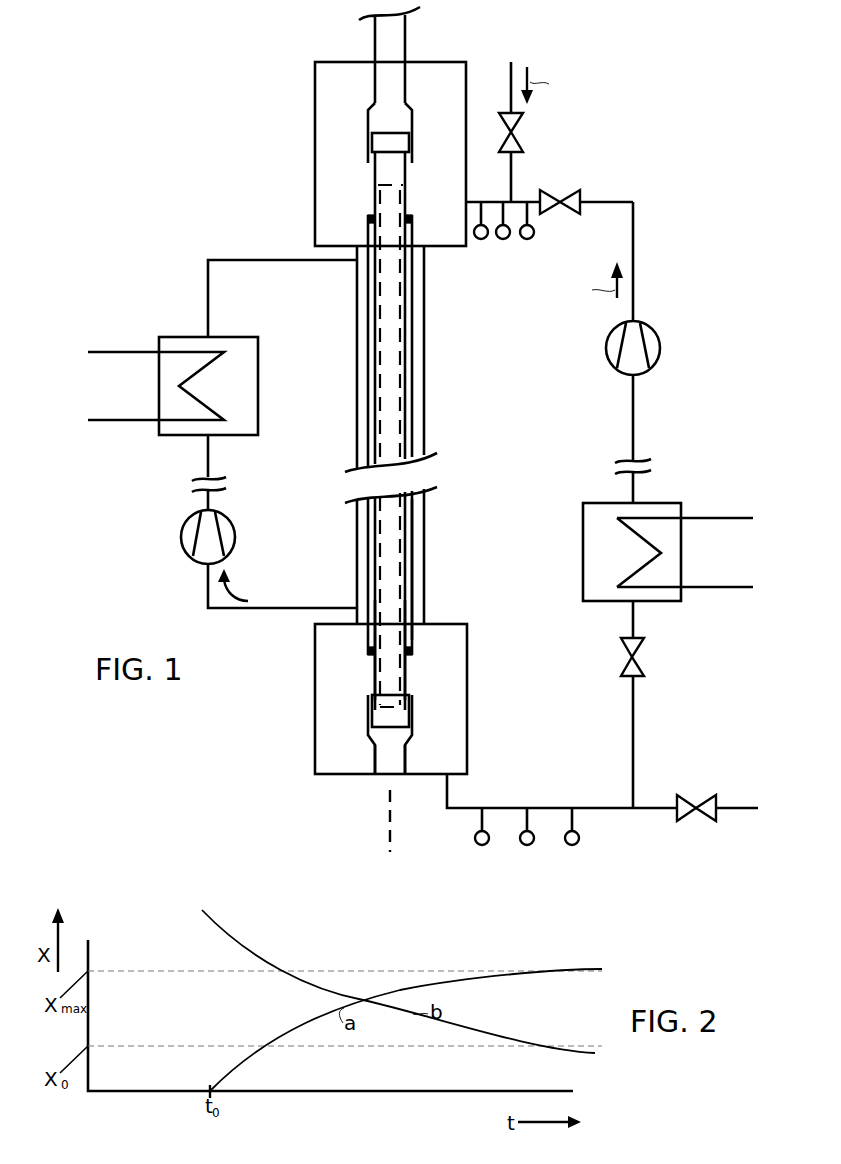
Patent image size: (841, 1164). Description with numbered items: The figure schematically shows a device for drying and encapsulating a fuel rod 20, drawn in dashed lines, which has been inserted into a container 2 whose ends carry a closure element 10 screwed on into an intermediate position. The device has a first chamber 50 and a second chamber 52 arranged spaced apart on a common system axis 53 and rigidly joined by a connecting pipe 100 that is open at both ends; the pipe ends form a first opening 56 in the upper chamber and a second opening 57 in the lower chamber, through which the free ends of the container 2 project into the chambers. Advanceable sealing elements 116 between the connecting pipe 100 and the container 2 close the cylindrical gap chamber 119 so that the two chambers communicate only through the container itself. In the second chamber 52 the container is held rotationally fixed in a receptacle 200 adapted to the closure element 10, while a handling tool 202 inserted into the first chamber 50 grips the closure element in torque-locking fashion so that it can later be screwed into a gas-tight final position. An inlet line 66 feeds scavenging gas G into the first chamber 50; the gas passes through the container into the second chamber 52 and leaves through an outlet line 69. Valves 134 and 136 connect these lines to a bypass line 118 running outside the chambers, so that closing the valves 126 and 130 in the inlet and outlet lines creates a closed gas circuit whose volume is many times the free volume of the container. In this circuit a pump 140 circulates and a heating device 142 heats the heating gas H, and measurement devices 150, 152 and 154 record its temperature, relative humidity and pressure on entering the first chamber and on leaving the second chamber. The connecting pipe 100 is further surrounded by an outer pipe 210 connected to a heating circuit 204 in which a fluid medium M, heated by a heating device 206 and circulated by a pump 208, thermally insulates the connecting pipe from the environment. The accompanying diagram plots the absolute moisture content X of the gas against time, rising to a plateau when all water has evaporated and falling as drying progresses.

The container 2 is at (410, 668).
The closure element 10 is at (400, 145).
The fuel rod 20 is at (392, 409).
The first chamber 50 is at (335, 95).
The second chamber 52 is at (435, 745).
The system axis 53 is at (388, 846).
The first opening 56 is at (368, 214).
The second opening 57 is at (367, 656).
The inlet line 66 is at (474, 201).
The outlet line 69 is at (445, 790).
The connecting pipe 100 is at (418, 362).
The sealing elements 116 is at (412, 228).
The bypass line 118 is at (633, 243).
The gap chamber 119 is at (411, 548).
The valve 126 is at (518, 133).
The valve 130 is at (696, 806).
The valve 134 is at (558, 200).
The valve 136 is at (636, 655).
The pump 140 is at (660, 347).
The heating device 142 is at (663, 502).
The measurement device 150 is at (481, 240).
The measurement device 152 is at (503, 240).
The measurement device 154 is at (527, 240).
The receptacle 200 is at (382, 752).
The handling tool 202 is at (392, 34).
The heating circuit 204 is at (208, 301).
The heating device 206 is at (180, 428).
The pump 208 is at (185, 540).
The outer pipe 210 is at (357, 337).